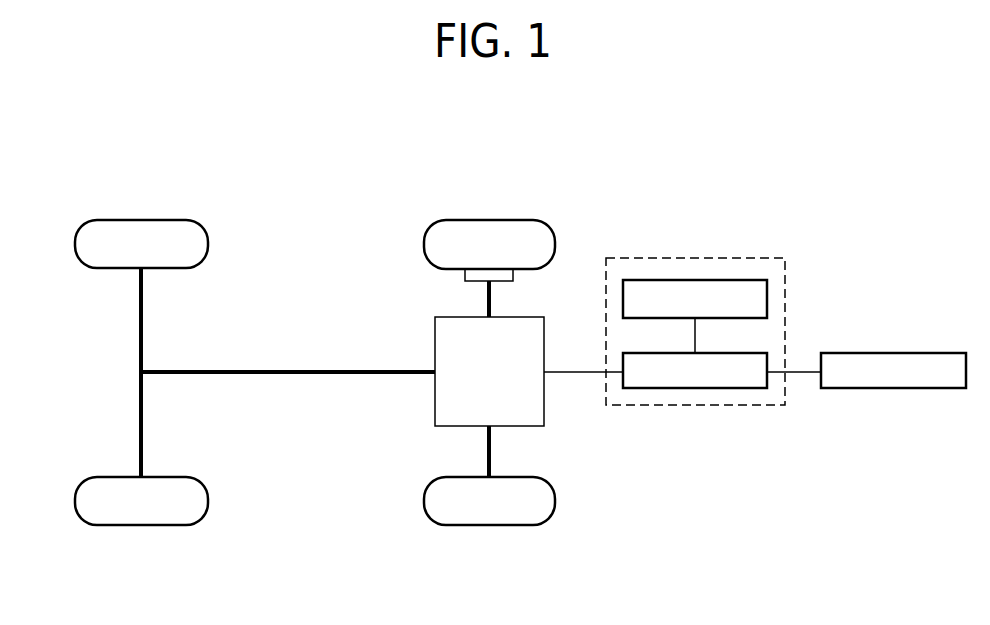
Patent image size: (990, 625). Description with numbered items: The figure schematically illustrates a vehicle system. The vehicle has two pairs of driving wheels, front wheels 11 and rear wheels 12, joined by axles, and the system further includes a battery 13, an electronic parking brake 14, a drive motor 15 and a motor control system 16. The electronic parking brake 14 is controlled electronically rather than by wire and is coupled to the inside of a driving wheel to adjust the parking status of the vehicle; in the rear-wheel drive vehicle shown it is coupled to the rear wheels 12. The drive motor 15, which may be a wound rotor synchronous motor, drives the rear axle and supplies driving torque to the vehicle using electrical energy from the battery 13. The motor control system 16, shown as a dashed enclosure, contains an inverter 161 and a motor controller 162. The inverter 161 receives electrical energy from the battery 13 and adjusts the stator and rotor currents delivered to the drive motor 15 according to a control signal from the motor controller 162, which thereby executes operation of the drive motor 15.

The front wheels 11 is at (141, 220).
The rear wheels 12 is at (489, 220).
The battery 13 is at (891, 389).
The electronic parking brake 14 is at (513, 277).
The drive motor 15 is at (534, 427).
The motor control system 16 is at (676, 258).
The inverter 161 is at (737, 389).
The motor controller 162 is at (739, 280).